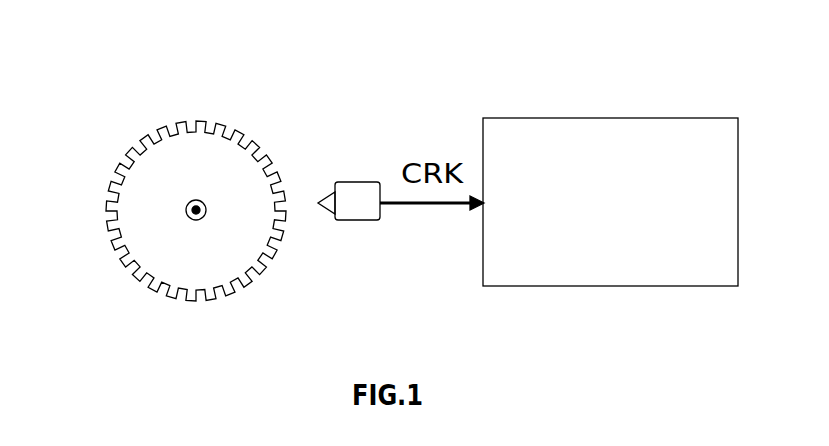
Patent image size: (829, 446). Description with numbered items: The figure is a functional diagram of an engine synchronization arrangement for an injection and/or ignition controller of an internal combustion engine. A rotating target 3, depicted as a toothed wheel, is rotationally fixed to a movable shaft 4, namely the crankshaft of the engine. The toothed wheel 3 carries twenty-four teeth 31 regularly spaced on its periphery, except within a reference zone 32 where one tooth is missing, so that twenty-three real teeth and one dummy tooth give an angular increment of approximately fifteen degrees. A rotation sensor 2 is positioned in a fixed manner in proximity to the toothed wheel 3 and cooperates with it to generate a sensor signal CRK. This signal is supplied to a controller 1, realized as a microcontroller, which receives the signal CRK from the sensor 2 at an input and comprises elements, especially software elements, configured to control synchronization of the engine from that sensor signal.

The controller 1 is at (610, 118).
The rotation sensor 2 is at (363, 182).
The rotating target 3 is at (190, 150).
The movable shaft 4 is at (200, 200).
The teeth 31 is at (124, 158).
The reference zone 32 is at (118, 188).